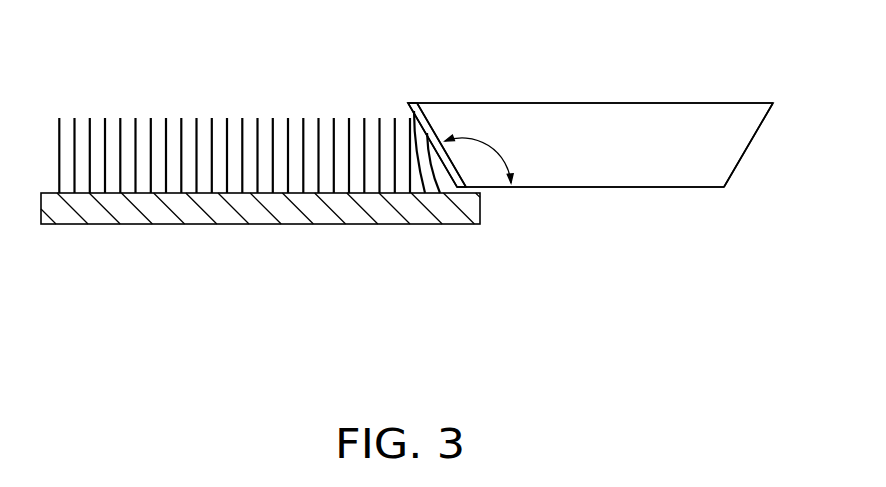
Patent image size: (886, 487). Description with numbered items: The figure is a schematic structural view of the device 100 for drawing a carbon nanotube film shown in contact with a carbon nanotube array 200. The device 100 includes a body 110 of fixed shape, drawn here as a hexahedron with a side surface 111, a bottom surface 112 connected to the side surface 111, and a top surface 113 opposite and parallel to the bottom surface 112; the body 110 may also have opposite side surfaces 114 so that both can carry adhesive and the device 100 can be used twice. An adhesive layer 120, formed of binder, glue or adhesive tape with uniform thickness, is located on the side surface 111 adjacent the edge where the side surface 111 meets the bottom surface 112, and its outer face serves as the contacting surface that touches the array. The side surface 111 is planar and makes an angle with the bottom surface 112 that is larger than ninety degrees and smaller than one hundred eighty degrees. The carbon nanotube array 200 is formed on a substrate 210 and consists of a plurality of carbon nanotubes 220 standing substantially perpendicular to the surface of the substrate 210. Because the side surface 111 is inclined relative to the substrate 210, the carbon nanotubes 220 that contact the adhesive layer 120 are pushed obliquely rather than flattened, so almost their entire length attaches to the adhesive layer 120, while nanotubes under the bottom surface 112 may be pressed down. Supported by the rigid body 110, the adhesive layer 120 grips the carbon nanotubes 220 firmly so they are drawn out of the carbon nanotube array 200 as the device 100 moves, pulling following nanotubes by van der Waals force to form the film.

The device 100 is at (593, 131).
The body 110 is at (705, 120).
The side surface 111 is at (429, 113).
The bottom surface 112 is at (633, 188).
The top surface 113 is at (652, 103).
The side surface 114 is at (748, 149).
The adhesive layer 120 is at (408, 104).
The carbon nanotube array 200 is at (253, 126).
The substrate 210 is at (50, 202).
The carbon nanotubes 220 is at (58, 133).